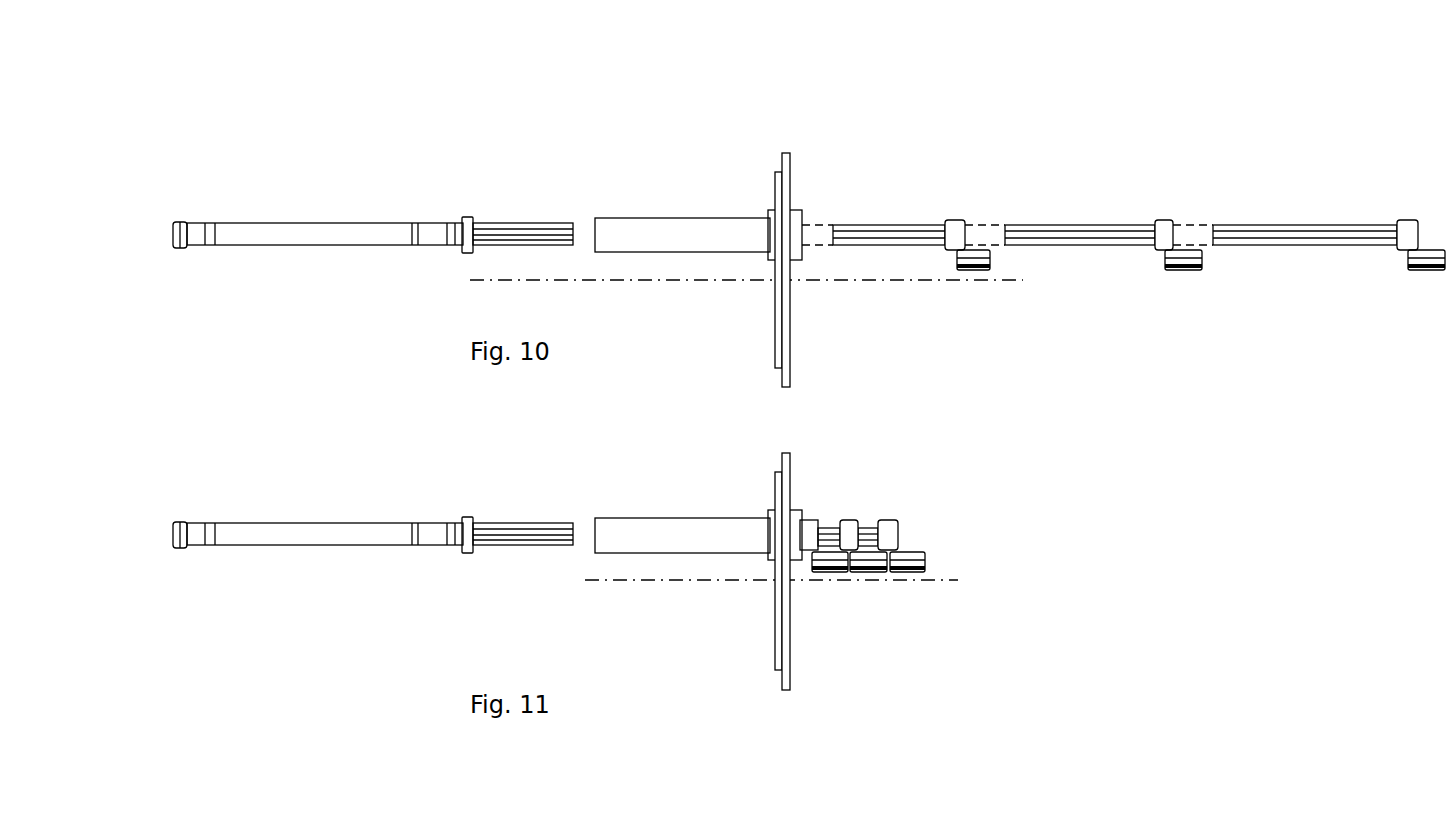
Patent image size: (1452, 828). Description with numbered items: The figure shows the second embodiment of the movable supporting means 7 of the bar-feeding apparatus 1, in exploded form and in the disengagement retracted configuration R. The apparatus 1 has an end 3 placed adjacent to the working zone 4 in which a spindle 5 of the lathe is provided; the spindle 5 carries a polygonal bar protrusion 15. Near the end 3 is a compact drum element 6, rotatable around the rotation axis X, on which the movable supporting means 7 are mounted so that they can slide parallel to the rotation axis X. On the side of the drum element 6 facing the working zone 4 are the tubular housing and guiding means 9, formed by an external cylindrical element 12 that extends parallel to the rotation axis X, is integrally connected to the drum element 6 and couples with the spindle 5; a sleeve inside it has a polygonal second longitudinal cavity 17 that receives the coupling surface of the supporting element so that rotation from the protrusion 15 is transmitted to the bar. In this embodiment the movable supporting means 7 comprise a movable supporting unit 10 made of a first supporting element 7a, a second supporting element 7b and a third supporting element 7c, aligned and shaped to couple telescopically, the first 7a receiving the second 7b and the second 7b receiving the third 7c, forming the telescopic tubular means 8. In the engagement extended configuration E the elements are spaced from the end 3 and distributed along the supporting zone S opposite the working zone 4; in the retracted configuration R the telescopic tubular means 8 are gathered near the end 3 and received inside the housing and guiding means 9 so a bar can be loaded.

In FIG. 10, the apparatus 1 is at (798, 106).
In FIG. 10, the end 3 is at (648, 138).
In FIG. 10, the working zone 4 is at (204, 146).
In FIG. 10, the spindle 5 is at (373, 222).
In FIG. 11, the spindle 5 is at (318, 535).
In FIG. 11, the drum element 6 is at (781, 516).
In FIG. 11, the movable supporting means 7 is at (868, 530).
In FIG. 10, the first supporting element 7a is at (920, 225).
In FIG. 10, the second supporting element 7b is at (1108, 225).
In FIG. 10, the third supporting element 7c is at (1328, 245).
In FIG. 10, the telescopic tubular means 8 is at (880, 225).
In FIG. 11, the telescopic tubular means 8 is at (828, 530).
In FIG. 11, the tubular housing and guiding means 9 is at (620, 540).
In FIG. 10, the movable supporting unit 10 is at (1186, 340).
In FIG. 11, the movable supporting unit 10 is at (914, 642).
In FIG. 10, the cylindrical element 12 is at (685, 228).
In FIG. 10, the polygonal bar protrusion 15 is at (492, 222).
In FIG. 11, the polygonal bar protrusion 15 is at (517, 535).
In FIG. 10, the second longitudinal cavity 17 is at (812, 205).
In FIG. 10, the engagement extended configuration E is at (974, 163).
In FIG. 10, the supporting zone S is at (1226, 138).
In FIG. 11, the disengagement retracted configuration R is at (831, 600).
In FIG. 10, the rotation axis X is at (852, 281).
In FIG. 11, the rotation axis X is at (945, 581).